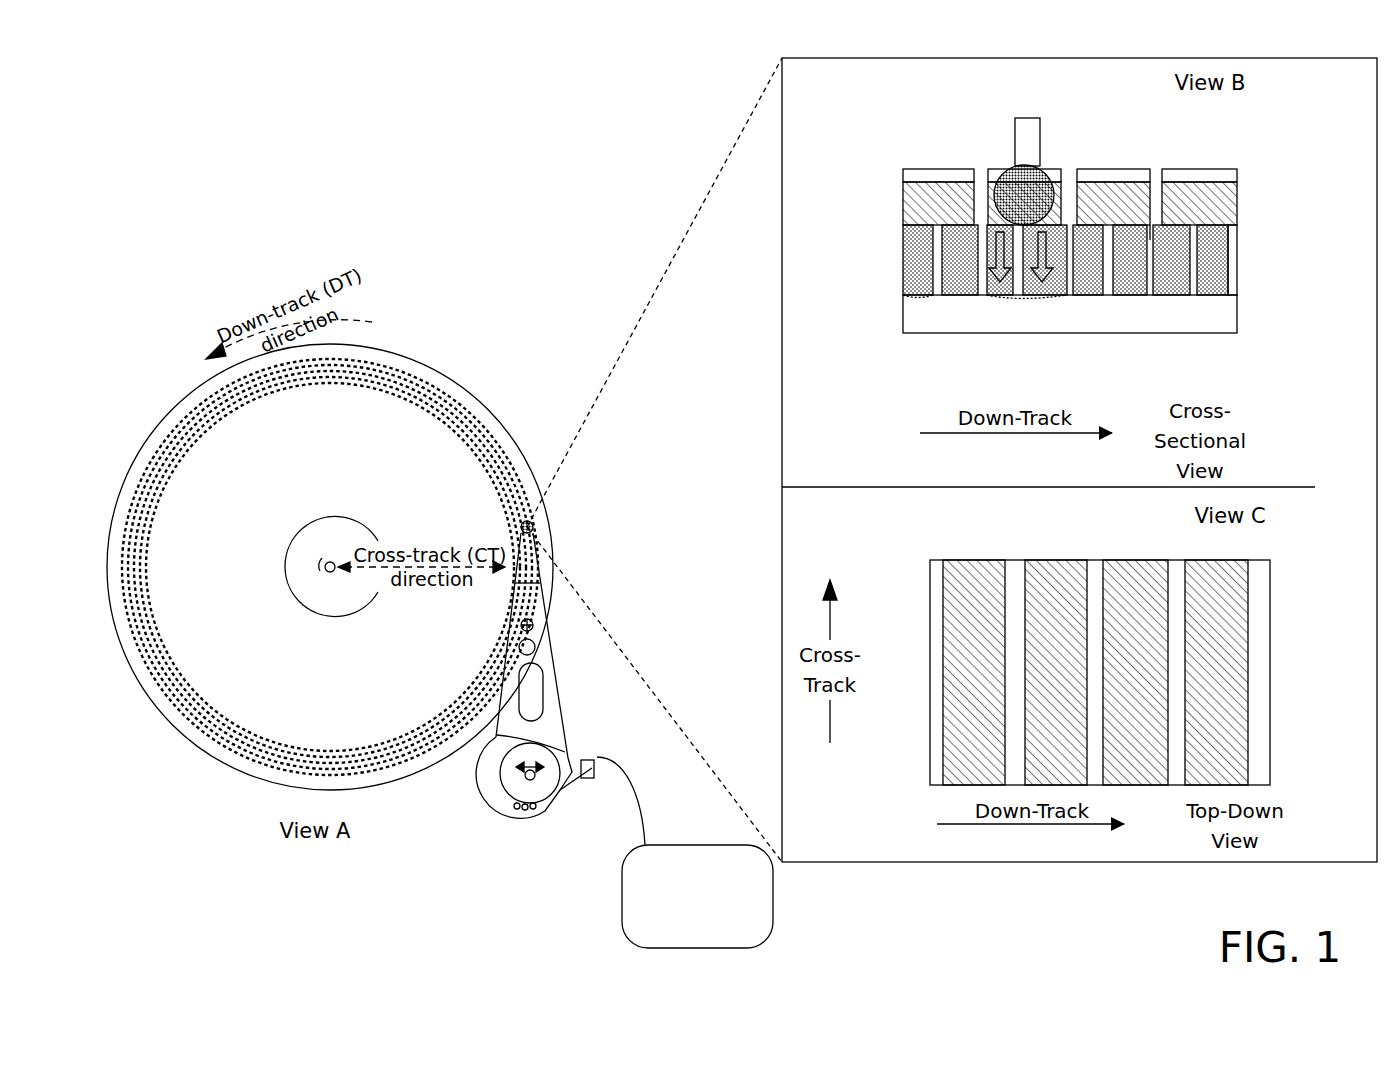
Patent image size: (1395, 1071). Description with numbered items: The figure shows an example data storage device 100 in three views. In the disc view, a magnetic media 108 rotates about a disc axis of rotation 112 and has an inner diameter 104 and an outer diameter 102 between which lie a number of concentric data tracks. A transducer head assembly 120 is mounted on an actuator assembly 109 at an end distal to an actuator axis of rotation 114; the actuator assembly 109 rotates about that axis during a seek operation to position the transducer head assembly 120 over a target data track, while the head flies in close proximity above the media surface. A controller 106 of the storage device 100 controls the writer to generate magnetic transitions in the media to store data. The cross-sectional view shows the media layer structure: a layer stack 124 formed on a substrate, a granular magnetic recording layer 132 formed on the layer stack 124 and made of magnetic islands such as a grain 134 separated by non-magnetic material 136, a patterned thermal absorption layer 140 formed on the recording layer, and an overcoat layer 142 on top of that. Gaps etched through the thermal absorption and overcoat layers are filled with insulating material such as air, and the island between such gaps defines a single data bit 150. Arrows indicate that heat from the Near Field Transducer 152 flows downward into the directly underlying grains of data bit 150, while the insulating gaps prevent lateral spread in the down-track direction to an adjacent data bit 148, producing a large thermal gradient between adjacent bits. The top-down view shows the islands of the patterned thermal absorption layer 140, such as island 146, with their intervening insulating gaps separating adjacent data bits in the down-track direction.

The data storage device 100 is at (200, 104).
The outer diameter 102 is at (467, 398).
The inner diameter 104 is at (301, 599).
The controller 106 is at (697, 896).
The magnetic media 108 is at (397, 350).
The actuator assembly 109 is at (560, 812).
The disc axis of rotation 112 is at (338, 556).
The actuator axis of rotation 114 is at (525, 777).
The transducer head assembly 120 is at (535, 527).
The layer stack 124 is at (1070, 314).
The granular magnetic recording layer 132 is at (1253, 259).
The grain 134 is at (1214, 267).
The non-magnetic material 136 is at (1149, 240).
The patterned thermal absorption layer 140 is at (1248, 208).
The overcoat layer 142 is at (1240, 173).
The magnetic grain column 146 is at (1246, 630).
The data bit 148 is at (942, 305).
The data bit 150 is at (1025, 300).
The Near Field Transducer (NFT) 152 is at (1042, 150).